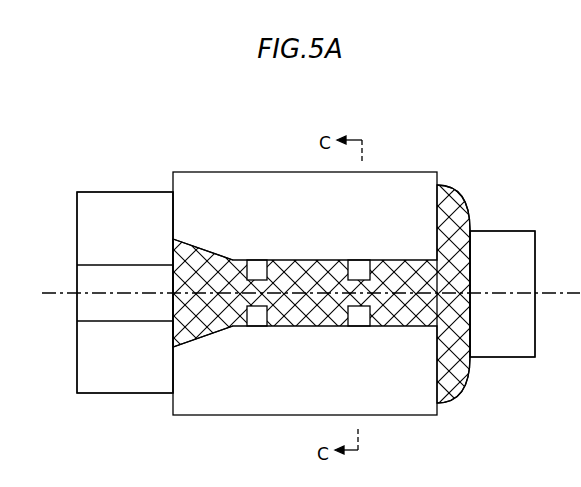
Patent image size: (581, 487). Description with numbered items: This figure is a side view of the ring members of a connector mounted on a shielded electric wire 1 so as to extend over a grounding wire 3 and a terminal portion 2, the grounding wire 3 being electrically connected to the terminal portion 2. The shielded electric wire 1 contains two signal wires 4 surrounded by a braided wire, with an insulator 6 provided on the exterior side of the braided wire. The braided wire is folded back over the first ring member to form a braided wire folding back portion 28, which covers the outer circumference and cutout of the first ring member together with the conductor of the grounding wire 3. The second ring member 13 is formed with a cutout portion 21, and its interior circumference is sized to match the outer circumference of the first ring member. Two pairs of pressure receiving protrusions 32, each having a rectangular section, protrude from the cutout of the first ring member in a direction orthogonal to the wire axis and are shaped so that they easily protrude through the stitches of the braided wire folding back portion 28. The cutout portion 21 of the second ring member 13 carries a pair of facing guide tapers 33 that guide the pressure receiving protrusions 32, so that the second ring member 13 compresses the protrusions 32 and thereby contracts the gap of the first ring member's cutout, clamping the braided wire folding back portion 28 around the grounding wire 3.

The shielded electric wire 1 is at (121, 171).
The terminal portion 2 is at (480, 180).
The grounding wire 3 is at (88, 310).
The signal wire 4 is at (514, 240).
The insulator 6 is at (110, 377).
The second ring member 13 is at (272, 185).
The cutout portion 21 is at (285, 327).
The braided wire folding back portion 28 is at (440, 313).
The pressure receiving protrusion 32 is at (257, 260).
The guide taper 33 is at (193, 247).